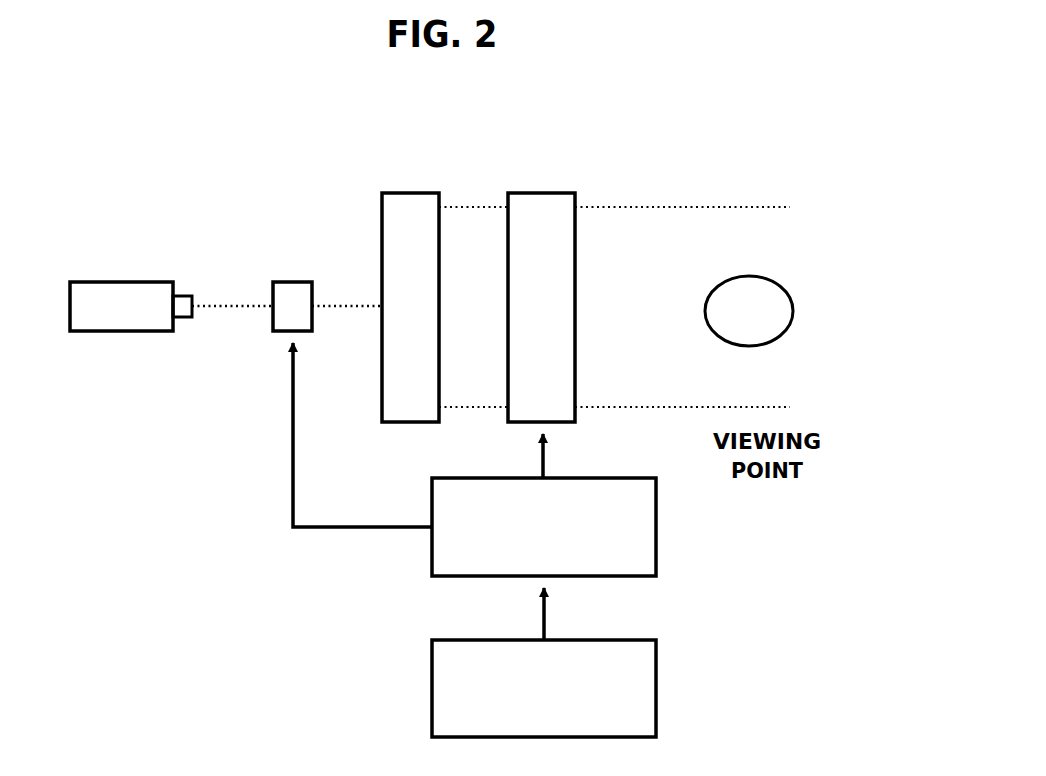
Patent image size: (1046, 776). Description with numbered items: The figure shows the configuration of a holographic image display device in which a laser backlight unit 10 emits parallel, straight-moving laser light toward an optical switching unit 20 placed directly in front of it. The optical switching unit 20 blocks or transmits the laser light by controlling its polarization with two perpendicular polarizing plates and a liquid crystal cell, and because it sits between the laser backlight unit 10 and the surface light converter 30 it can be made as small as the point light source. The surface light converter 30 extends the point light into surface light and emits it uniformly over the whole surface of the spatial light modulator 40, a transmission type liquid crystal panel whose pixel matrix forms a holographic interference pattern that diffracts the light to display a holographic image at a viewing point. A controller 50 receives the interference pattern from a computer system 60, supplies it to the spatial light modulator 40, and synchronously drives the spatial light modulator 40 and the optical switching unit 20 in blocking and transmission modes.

The laser backlight unit 10 is at (123, 282).
The optical switching unit 20 is at (290, 282).
The surface light converter 30 is at (410, 193).
The spatial light modulator 40 is at (542, 193).
The controller 50 is at (622, 478).
The computer system 60 is at (638, 640).